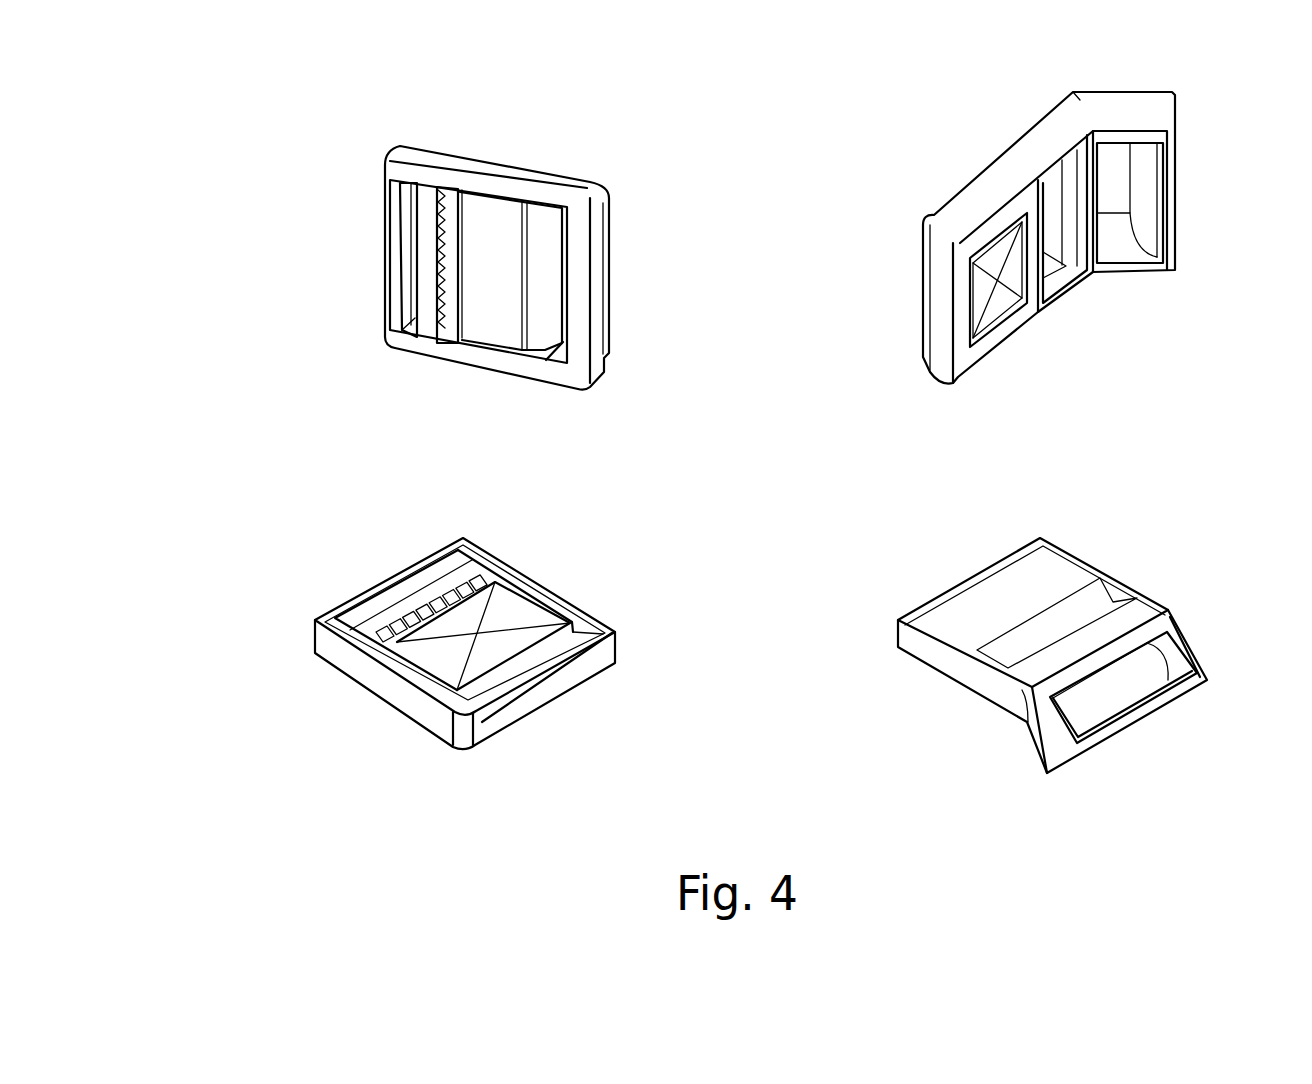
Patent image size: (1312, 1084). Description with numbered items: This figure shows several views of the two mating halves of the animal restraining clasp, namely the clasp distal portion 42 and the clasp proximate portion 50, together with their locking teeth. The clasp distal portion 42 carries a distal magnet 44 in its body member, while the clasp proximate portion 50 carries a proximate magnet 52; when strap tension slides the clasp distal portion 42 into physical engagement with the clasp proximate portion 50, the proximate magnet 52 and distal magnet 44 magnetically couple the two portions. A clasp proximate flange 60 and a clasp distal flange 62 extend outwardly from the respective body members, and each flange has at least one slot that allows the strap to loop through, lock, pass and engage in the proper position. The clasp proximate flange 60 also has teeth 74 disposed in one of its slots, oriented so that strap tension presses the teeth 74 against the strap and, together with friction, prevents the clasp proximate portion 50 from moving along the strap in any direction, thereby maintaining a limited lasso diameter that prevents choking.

The clasp distal portion 42 is at (968, 195).
The distal magnet 44 is at (997, 302).
The clasp proximate portion 50 is at (578, 250).
The proximate magnet 52 is at (487, 638).
The clasp proximate flange 60 is at (412, 255).
The clasp distal flange 62 is at (1047, 238).
The teeth 74 is at (376, 638).